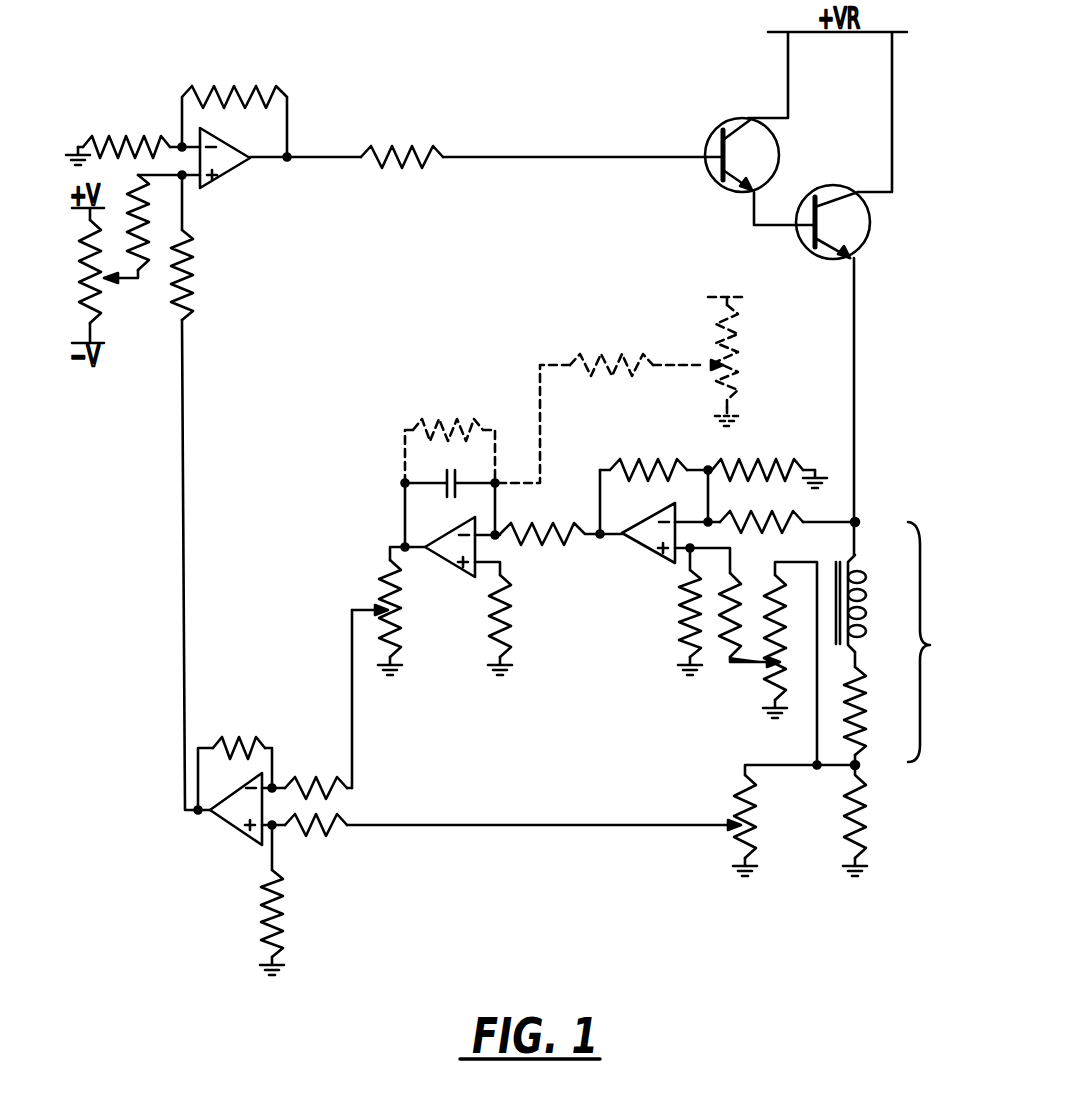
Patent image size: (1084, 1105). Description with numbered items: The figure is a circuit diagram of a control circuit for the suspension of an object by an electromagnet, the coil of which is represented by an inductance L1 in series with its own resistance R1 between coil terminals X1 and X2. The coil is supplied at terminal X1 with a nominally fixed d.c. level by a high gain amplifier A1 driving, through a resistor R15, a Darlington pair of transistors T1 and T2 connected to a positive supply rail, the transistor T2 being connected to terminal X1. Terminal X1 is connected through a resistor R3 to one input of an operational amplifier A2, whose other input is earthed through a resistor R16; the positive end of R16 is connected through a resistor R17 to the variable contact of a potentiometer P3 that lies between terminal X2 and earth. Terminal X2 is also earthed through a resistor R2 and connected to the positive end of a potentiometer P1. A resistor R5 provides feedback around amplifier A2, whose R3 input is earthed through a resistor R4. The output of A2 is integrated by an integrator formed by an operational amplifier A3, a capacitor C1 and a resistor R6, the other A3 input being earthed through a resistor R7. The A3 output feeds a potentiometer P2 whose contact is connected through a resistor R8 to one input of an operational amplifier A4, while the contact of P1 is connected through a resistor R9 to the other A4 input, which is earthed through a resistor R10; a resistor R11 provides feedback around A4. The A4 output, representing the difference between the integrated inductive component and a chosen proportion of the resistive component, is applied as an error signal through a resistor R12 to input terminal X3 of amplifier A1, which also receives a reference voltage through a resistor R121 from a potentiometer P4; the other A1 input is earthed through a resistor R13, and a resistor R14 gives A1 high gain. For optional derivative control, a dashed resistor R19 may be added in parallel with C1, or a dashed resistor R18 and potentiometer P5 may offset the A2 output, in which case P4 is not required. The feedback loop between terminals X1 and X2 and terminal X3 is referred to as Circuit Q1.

The coil resistance R1 is at (872, 711).
The resistor R2 is at (869, 820).
The resistor R3 is at (761, 508).
The resistor R4 is at (757, 455).
The resistor R5 is at (643, 455).
The resistor R6 is at (550, 517).
The resistor R7 is at (517, 625).
The resistor R8 is at (316, 770).
The resistor R9 is at (316, 841).
The resistor R10 is at (297, 922).
The resistor R11 is at (239, 734).
The resistor R12 is at (200, 275).
The resistor R13 is at (118, 133).
The resistor R14 is at (234, 103).
The resistor R15 is at (402, 141).
The resistor R16 is at (673, 622).
The resistor R17 is at (726, 640).
The resistor R18 is at (611, 348).
The resistor R19 is at (450, 432).
The resistor R121 is at (157, 257).
The potentiometer P1 is at (762, 825).
The potentiometer P2 is at (404, 617).
The potentiometer P3 is at (789, 646).
The potentiometer P4 is at (105, 271).
The potentiometer P5 is at (741, 345).
The high gain amplifier A1 is at (225, 169).
The operational amplifier A2 is at (648, 548).
The operational amplifier A3 is at (450, 560).
The operational amplifier A4 is at (233, 821).
The transistor T1 is at (739, 170).
The transistor T2 is at (833, 241).
The capacitor C1 is at (450, 494).
The inductance L1 is at (866, 603).
The Circuit Q1 is at (934, 642).
The coil terminal X1 is at (858, 519).
The coil terminal X2 is at (860, 766).
The input terminal X3 is at (185, 178).